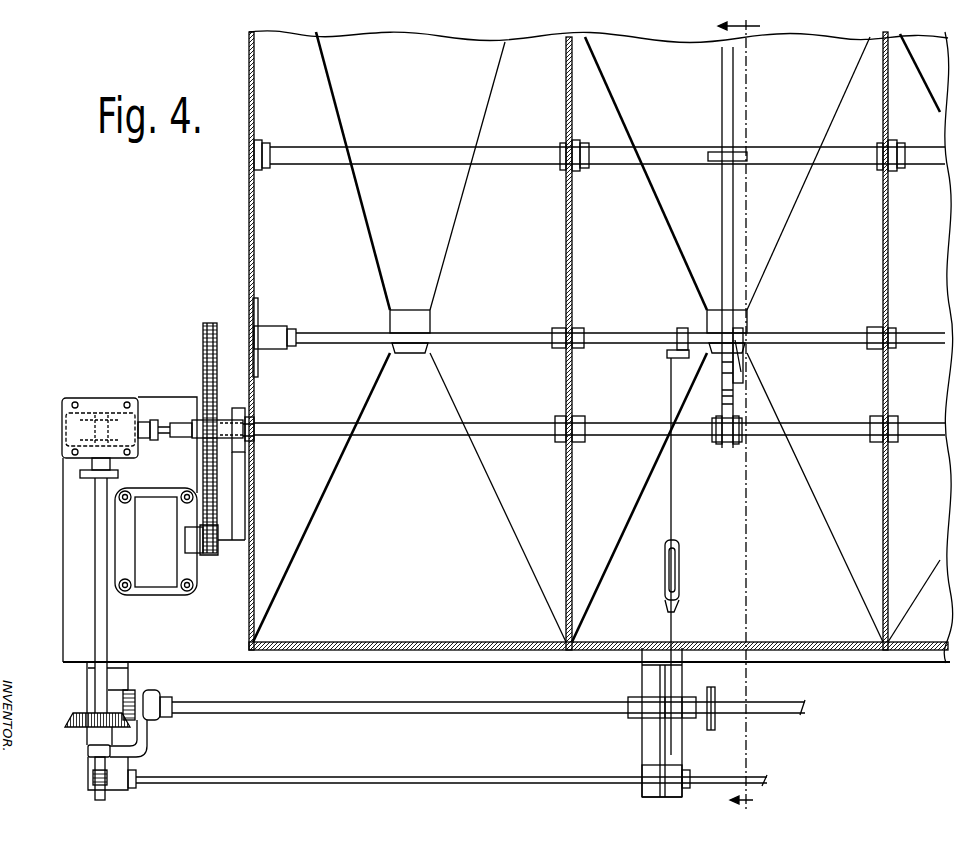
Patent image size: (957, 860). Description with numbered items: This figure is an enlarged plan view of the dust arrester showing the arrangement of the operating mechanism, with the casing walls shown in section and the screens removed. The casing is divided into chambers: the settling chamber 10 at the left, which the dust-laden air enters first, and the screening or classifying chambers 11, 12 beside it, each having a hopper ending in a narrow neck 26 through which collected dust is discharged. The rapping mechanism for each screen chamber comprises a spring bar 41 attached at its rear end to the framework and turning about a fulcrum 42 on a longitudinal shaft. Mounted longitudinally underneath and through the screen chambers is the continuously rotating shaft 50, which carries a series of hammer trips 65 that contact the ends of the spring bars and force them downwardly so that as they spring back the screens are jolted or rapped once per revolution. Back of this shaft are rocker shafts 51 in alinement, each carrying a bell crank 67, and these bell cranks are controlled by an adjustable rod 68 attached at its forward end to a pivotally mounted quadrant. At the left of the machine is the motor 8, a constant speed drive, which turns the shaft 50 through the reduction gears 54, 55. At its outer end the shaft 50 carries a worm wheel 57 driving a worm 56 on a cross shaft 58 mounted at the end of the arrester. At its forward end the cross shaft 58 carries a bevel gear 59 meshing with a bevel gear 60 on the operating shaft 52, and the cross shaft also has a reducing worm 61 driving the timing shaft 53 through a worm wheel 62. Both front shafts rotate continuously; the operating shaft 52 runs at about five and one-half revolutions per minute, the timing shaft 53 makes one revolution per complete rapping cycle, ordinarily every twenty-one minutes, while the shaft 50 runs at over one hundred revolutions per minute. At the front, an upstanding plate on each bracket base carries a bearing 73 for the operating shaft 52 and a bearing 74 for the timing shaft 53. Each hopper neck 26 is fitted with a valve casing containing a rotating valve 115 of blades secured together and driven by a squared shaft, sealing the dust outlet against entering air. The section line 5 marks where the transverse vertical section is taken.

The section line 5— 5 is at (745, 415).
The motor 8 is at (158, 577).
The settling chamber 10 is at (262, 215).
The first screen chamber 11 is at (822, 632).
The middle screen chamber 12 is at (909, 630).
The hopper neck 26 is at (410, 312).
The spring bar 41 is at (722, 236).
The fulcrum 42 is at (682, 165).
The continuously rotating shaft 50 is at (623, 423).
The rocker shaft 51 is at (619, 340).
The operating shaft 52 is at (328, 705).
The timing shaft 53 is at (250, 775).
The reduction gear 54 is at (215, 553).
The reduction gear 55 is at (203, 340).
The worm 56 is at (84, 410).
The worm wheel 57 is at (70, 430).
The cross shaft 58 is at (95, 553).
The bevel gear 59 is at (78, 713).
The bevel gear 60 is at (133, 692).
The reducing worm 61 is at (95, 776).
The worm wheel 62 is at (105, 797).
The hammer trip 65 is at (731, 406).
The bell crank 67 is at (677, 340).
The adjustable rod 68 is at (673, 500).
The bearing 73 is at (652, 703).
The bearing 74 is at (655, 772).
The rotating valve 115 is at (720, 674).